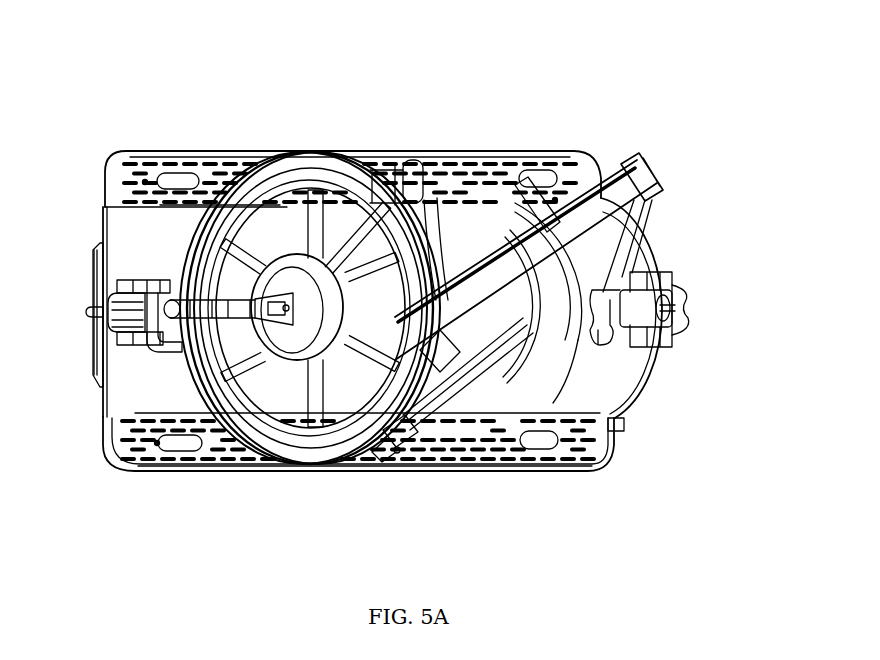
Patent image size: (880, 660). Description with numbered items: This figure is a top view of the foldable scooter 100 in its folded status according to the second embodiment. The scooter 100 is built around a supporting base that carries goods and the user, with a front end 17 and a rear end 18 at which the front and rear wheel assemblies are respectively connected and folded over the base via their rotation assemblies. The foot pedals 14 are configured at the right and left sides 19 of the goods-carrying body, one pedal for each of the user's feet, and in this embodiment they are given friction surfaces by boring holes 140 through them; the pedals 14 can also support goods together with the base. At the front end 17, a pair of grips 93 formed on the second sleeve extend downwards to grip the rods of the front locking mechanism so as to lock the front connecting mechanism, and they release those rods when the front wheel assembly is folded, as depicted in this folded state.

The foldable scooter 100 is at (147, 71).
The left and right sides 19 is at (473, 150).
The foot pedals 14 is at (233, 457).
The boring holes 140 is at (210, 448).
The rear end 18 is at (103, 408).
The front end 17 is at (622, 430).
The grips 93 is at (598, 350).